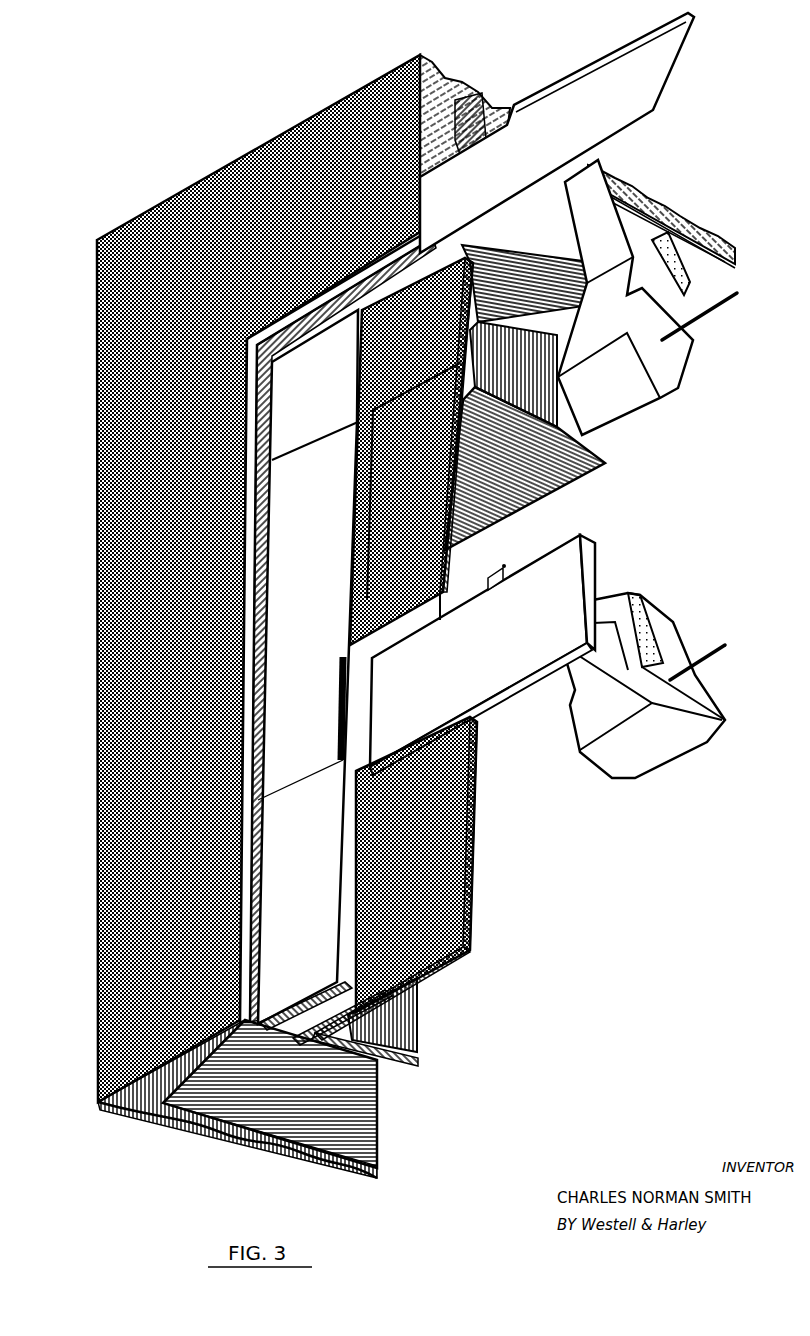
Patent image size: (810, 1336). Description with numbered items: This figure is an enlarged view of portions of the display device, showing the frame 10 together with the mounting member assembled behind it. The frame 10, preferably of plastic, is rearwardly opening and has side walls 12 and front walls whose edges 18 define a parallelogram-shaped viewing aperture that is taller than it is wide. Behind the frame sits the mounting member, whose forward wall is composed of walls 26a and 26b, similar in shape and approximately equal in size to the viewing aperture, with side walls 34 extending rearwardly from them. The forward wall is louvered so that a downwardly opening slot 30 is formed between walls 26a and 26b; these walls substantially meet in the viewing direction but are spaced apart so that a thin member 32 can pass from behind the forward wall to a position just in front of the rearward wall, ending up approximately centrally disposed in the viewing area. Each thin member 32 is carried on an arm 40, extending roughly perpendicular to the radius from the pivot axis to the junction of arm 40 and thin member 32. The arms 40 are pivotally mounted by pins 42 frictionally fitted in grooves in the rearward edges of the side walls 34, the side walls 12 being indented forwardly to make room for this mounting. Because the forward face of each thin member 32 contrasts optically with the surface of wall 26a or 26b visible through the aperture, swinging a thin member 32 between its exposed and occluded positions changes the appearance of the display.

The frame 10 is at (92, 882).
The side walls 12 is at (365, 1133).
The edges 18 is at (257, 716).
The wall 26a is at (445, 908).
The wall 26b is at (378, 503).
The slot 30 is at (417, 620).
The thin member 32 is at (632, 75).
The side walls 34 is at (548, 455).
The arm 40 is at (600, 205).
The pin 42 is at (730, 305).